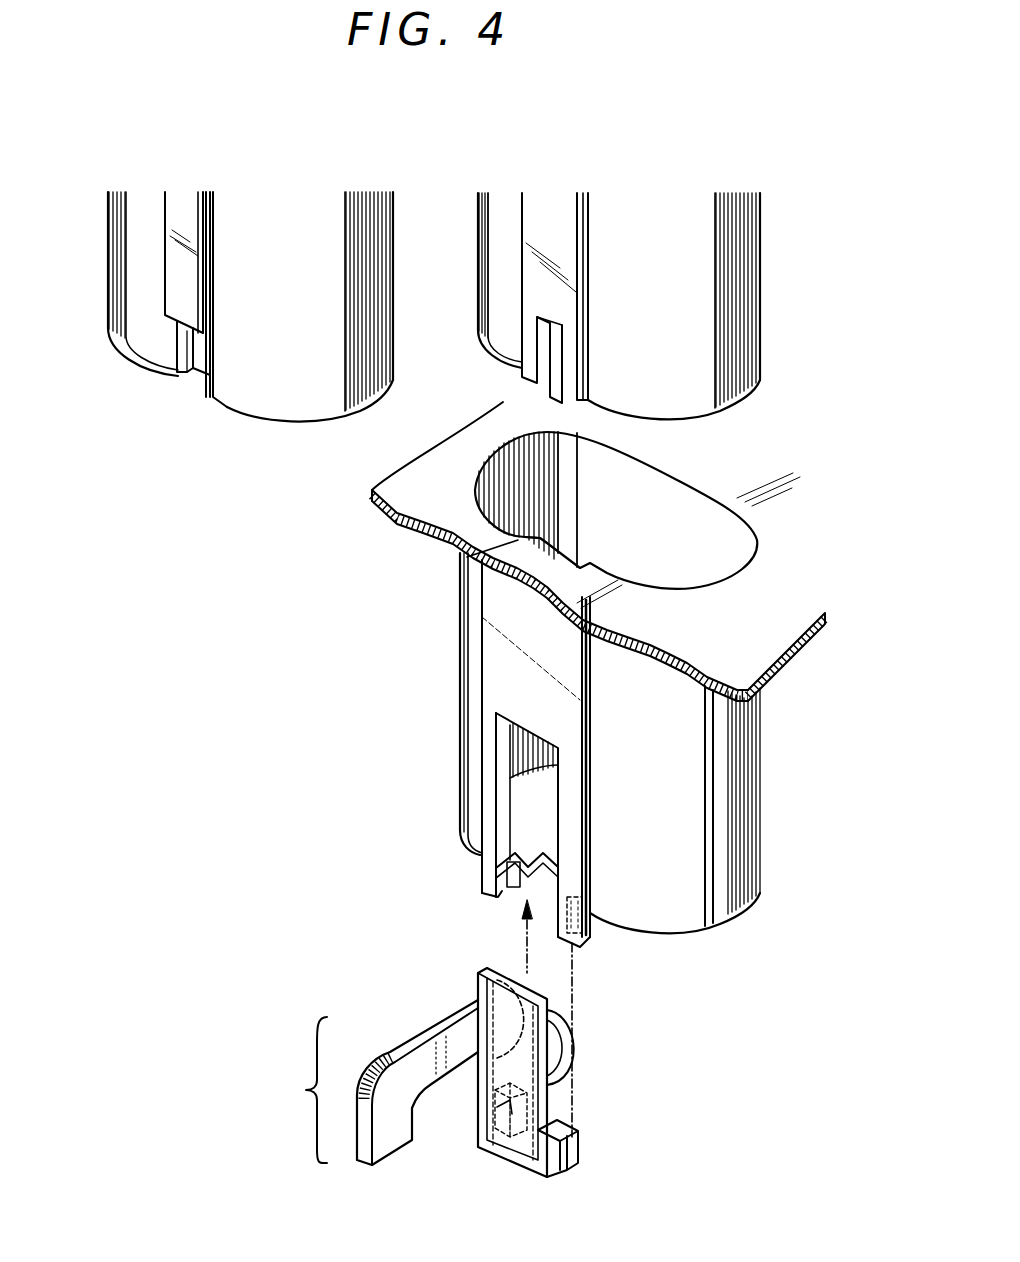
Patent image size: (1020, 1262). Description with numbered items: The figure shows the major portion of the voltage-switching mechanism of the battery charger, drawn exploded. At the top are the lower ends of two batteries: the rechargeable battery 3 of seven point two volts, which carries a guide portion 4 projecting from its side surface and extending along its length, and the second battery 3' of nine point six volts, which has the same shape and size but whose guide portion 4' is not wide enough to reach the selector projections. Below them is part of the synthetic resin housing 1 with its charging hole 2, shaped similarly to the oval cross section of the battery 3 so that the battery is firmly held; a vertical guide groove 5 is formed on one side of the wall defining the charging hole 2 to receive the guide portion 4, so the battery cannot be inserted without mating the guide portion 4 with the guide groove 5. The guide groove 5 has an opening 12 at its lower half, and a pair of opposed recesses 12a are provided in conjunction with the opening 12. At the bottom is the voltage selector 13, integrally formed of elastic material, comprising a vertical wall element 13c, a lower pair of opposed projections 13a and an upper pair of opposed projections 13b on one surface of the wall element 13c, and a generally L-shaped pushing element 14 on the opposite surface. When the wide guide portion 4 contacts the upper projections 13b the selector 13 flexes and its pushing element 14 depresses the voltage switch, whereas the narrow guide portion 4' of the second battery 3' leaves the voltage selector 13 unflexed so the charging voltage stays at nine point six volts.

The housing 1 is at (747, 630).
The charging hole 2 is at (708, 562).
The rechargeable battery 3 is at (646, 306).
The second battery 3' is at (250, 329).
The guide portion 4 is at (510, 298).
The guide portion of the second battery 4' is at (127, 282).
The guide groove 5 is at (523, 537).
The opening 12 is at (523, 780).
The recesses 12a is at (507, 873).
The voltage selector 13 is at (413, 1072).
The lower projections 13a is at (500, 1103).
The upper projections 13b is at (523, 973).
The vertical wall element 13c is at (523, 1095).
The pushing element 14 is at (400, 1080).